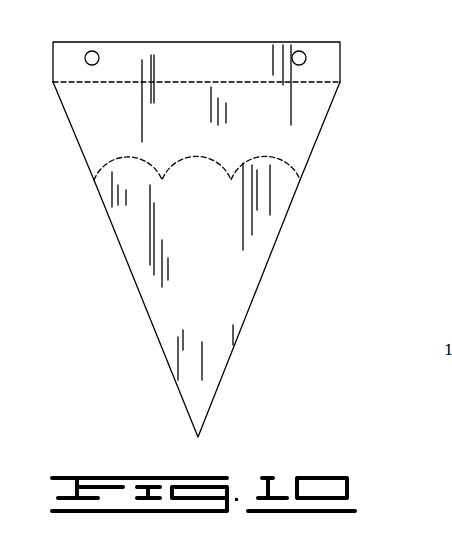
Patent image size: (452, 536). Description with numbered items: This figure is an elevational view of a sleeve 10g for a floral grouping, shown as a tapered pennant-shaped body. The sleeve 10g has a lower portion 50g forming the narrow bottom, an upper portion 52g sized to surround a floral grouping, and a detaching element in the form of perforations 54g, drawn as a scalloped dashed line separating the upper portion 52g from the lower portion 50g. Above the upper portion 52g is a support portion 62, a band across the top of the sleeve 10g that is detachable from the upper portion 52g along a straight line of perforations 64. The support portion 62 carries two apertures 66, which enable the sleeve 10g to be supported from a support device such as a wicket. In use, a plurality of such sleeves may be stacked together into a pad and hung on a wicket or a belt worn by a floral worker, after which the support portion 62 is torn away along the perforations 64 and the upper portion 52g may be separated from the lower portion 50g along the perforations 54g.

The sleeve 10g is at (243, 222).
The lower portion 50g is at (255, 300).
The upper portion 52g is at (321, 130).
The perforations 54g is at (278, 155).
The support portion 62 is at (340, 63).
The perforations 64 is at (300, 83).
The apertures 66 is at (93, 51).